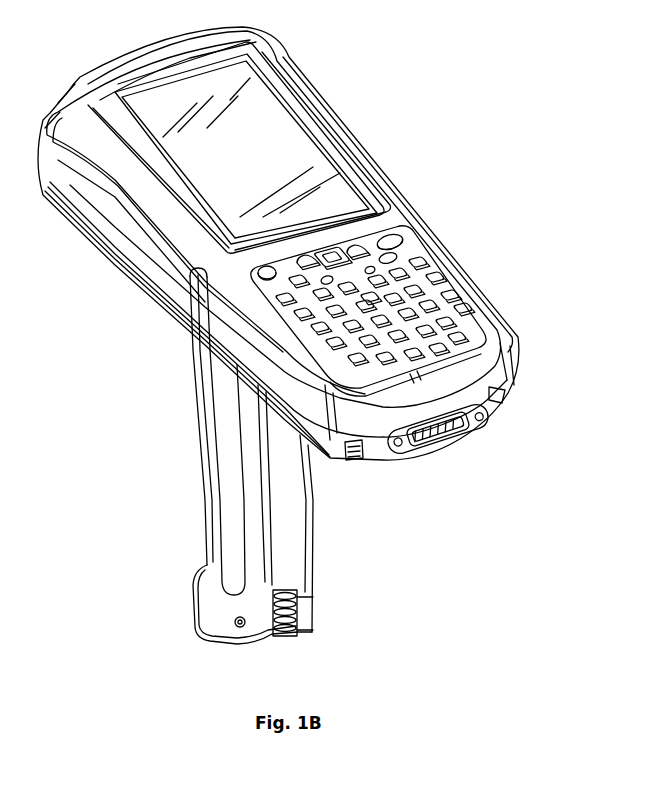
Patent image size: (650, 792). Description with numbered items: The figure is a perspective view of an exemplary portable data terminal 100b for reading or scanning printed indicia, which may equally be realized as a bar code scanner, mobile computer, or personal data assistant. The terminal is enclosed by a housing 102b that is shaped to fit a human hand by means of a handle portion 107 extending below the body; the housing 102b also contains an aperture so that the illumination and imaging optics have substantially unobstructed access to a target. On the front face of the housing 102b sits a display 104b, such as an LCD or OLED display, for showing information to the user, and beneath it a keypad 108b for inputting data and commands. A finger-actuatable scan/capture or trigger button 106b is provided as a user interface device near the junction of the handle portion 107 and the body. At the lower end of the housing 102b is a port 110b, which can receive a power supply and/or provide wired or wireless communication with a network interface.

The portable data terminal 100b is at (345, 88).
The housing 102b is at (393, 199).
The display 104b is at (308, 153).
The keypad 108b is at (436, 286).
The trigger button 106b is at (197, 347).
The handle portion 107 is at (230, 446).
The port 110b is at (455, 443).